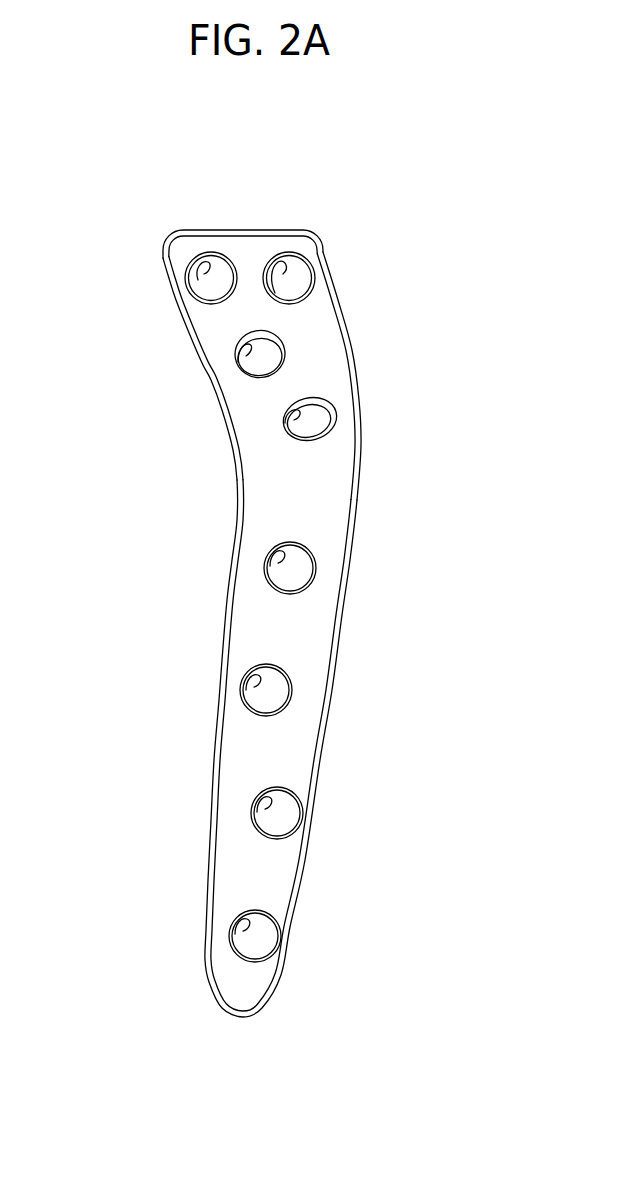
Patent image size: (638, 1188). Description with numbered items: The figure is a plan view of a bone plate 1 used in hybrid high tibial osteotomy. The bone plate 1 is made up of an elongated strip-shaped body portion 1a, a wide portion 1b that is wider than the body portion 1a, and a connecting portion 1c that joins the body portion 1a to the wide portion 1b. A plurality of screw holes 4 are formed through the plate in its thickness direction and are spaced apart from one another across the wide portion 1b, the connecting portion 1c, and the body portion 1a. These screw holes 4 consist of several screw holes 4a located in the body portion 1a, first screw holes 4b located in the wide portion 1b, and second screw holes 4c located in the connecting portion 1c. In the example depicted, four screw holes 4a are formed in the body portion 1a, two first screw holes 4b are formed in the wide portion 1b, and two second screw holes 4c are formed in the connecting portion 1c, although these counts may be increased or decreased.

The bone plate 1 is at (303, 235).
The body portion 1a is at (343, 618).
The wide portion 1b is at (325, 248).
The connecting portion 1c is at (357, 383).
The screw holes 4 is at (90, 248).
The screw holes 4a is at (272, 567).
The first screw holes 4b is at (198, 280).
The second screw holes 4c is at (238, 362).